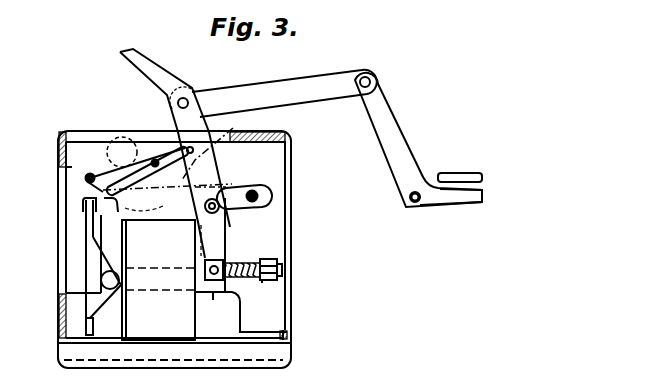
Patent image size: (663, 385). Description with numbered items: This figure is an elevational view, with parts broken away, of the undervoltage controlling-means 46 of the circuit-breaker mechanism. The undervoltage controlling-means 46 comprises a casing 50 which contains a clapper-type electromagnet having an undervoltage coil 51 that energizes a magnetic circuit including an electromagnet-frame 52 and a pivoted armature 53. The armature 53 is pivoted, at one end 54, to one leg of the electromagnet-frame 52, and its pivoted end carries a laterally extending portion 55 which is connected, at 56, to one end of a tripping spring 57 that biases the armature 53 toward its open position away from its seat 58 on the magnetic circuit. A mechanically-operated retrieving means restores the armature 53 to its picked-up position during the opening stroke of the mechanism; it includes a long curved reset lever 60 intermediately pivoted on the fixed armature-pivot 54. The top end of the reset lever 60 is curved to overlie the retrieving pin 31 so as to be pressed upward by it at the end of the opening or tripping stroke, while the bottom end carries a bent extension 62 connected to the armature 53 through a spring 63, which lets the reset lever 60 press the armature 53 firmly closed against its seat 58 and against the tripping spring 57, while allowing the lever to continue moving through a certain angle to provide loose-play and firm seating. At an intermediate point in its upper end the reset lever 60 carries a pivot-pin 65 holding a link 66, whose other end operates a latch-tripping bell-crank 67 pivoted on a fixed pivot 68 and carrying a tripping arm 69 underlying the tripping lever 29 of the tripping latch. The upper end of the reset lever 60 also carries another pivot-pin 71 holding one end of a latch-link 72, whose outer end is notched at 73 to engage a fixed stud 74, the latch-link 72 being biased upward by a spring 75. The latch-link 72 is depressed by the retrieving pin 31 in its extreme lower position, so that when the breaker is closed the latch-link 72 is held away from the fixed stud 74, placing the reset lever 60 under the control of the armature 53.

The tripping lever 29 is at (481, 174).
The retrieving pin 31 is at (114, 140).
The undervoltage controlling-means 46 is at (50, 285).
The casing 50 is at (58, 334).
The undervoltage coil 51 is at (128, 306).
The electromagnet-frame 52 is at (118, 241).
The pivoted armature 53 is at (214, 293).
The armature pivot 54 is at (220, 207).
The laterally extending portion 55 is at (267, 196).
The connection point 56 is at (256, 188).
The tripping spring 57 is at (82, 202).
The seat 58 is at (206, 294).
The reset lever 60 is at (140, 63).
The bent extension 62 is at (255, 259).
The spring 63 is at (238, 279).
The pivot-pin 65 is at (178, 103).
The link 66 is at (233, 92).
The latch-tripping bell-crank 67 is at (402, 140).
The fixed pivot 68 is at (411, 201).
The tripping arm 69 is at (484, 196).
The pivot-pin 71 is at (219, 146).
The latch-link 72 is at (168, 175).
The notch 73 is at (86, 178).
The fixed stud 74 is at (90, 173).
The spring 75 is at (180, 142).